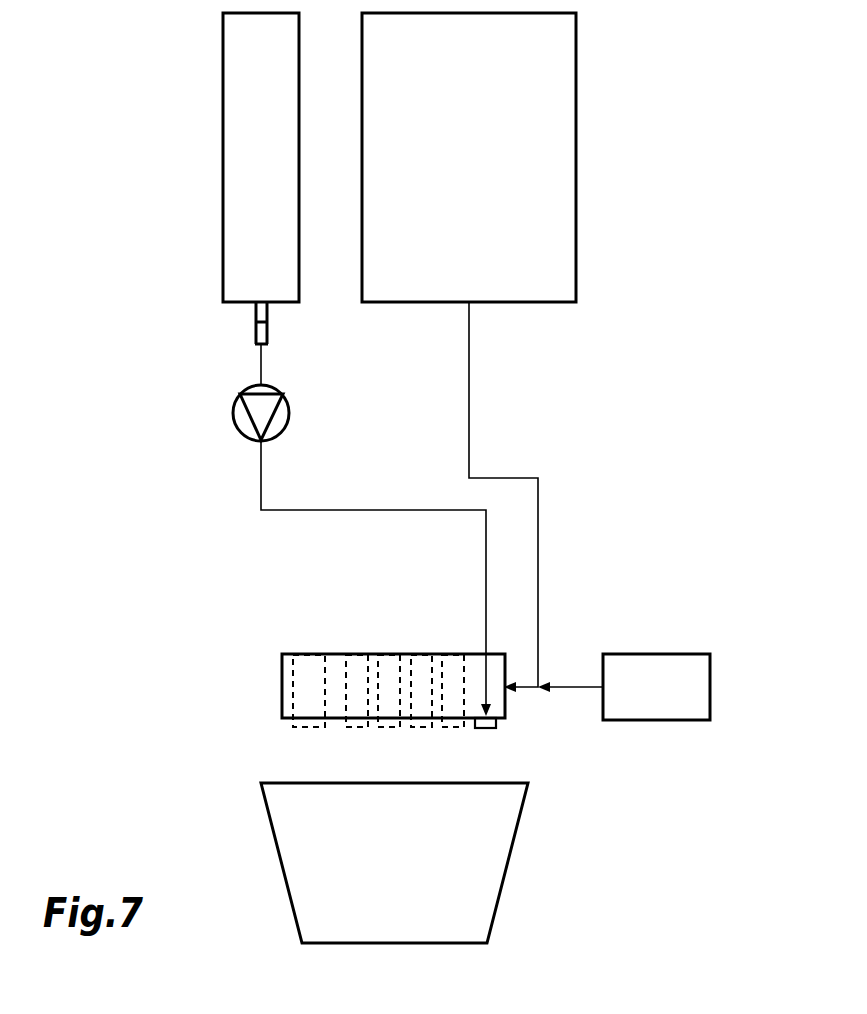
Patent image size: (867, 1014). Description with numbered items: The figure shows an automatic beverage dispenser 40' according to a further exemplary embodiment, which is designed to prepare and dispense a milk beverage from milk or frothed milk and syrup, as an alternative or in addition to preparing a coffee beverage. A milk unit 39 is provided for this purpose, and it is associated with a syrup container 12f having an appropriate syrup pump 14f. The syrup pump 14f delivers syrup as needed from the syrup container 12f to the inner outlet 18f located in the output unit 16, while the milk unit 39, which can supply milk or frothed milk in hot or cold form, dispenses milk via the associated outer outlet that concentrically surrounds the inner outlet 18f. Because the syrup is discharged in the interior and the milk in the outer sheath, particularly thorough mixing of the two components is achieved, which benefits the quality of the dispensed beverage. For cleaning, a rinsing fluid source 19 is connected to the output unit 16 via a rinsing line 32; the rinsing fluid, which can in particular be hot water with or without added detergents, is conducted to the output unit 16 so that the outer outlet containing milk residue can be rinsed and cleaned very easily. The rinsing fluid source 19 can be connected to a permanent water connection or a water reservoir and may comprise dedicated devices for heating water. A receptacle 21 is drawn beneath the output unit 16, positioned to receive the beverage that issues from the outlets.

The syrup container 12f is at (277, 190).
The milk unit 39 is at (489, 190).
The automatic beverage dispenser 40' is at (399, 509).
The syrup pump 14f is at (238, 420).
The rinsing line 32 is at (572, 683).
The output unit 16 is at (282, 697).
The inner outlet 18f is at (485, 728).
The rinsing fluid source 19 is at (687, 685).
The collecting container 21 is at (403, 883).